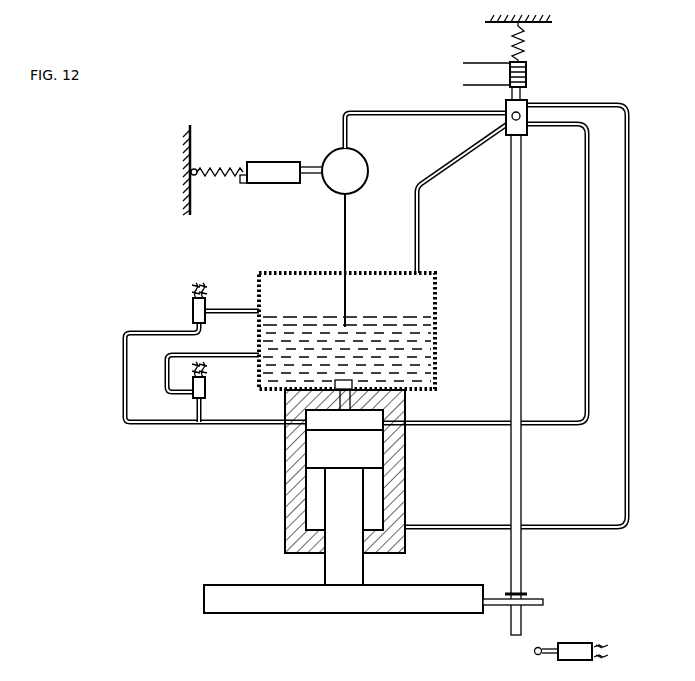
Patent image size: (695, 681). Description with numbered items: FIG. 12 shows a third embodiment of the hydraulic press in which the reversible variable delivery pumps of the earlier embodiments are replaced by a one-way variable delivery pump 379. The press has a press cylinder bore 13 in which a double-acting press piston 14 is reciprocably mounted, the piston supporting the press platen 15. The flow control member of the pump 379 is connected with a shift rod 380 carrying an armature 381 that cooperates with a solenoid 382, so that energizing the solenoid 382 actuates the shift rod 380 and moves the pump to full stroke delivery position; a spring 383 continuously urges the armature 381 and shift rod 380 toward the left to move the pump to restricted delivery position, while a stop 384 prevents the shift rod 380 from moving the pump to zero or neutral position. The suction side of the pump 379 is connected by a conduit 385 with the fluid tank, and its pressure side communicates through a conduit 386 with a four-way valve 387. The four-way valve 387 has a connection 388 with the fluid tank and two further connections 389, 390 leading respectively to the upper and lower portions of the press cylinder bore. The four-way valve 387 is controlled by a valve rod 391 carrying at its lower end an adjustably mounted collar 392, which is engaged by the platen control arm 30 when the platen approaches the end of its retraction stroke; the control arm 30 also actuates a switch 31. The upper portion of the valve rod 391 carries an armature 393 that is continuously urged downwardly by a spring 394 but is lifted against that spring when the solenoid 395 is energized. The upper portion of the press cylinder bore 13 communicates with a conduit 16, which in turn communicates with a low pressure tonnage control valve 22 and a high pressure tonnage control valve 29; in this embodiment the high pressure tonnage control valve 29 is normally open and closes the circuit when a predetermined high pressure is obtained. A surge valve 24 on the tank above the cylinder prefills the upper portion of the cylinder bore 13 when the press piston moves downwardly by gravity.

The press cylinder bore 13 is at (310, 512).
The double-acting press piston 14 is at (350, 462).
The press platen 15 is at (236, 590).
The conduit 16 is at (255, 424).
The low pressure tonnage control valve 22 is at (206, 388).
The surge valve 24 is at (342, 413).
The high pressure tonnage control valve 29 is at (206, 306).
The control arm 30 is at (545, 603).
The switch 31 is at (568, 652).
The one-way variable delivery pump 379 is at (323, 160).
The shift rod 380 is at (316, 176).
The armature 381 is at (248, 184).
The solenoid 382 is at (275, 185).
The spring 383 is at (222, 160).
The stop 384 is at (240, 182).
The conduit 385 is at (370, 235).
The conduit 386 is at (402, 112).
The four-way valve 387 is at (527, 104).
The connection 388 is at (419, 231).
The connection 389 is at (586, 206).
The connection 390 is at (630, 168).
The valve rod 391 is at (522, 300).
The collar 392 is at (521, 594).
The armature 393 is at (526, 64).
The spring 394 is at (510, 47).
The solenoid 395 is at (509, 73).